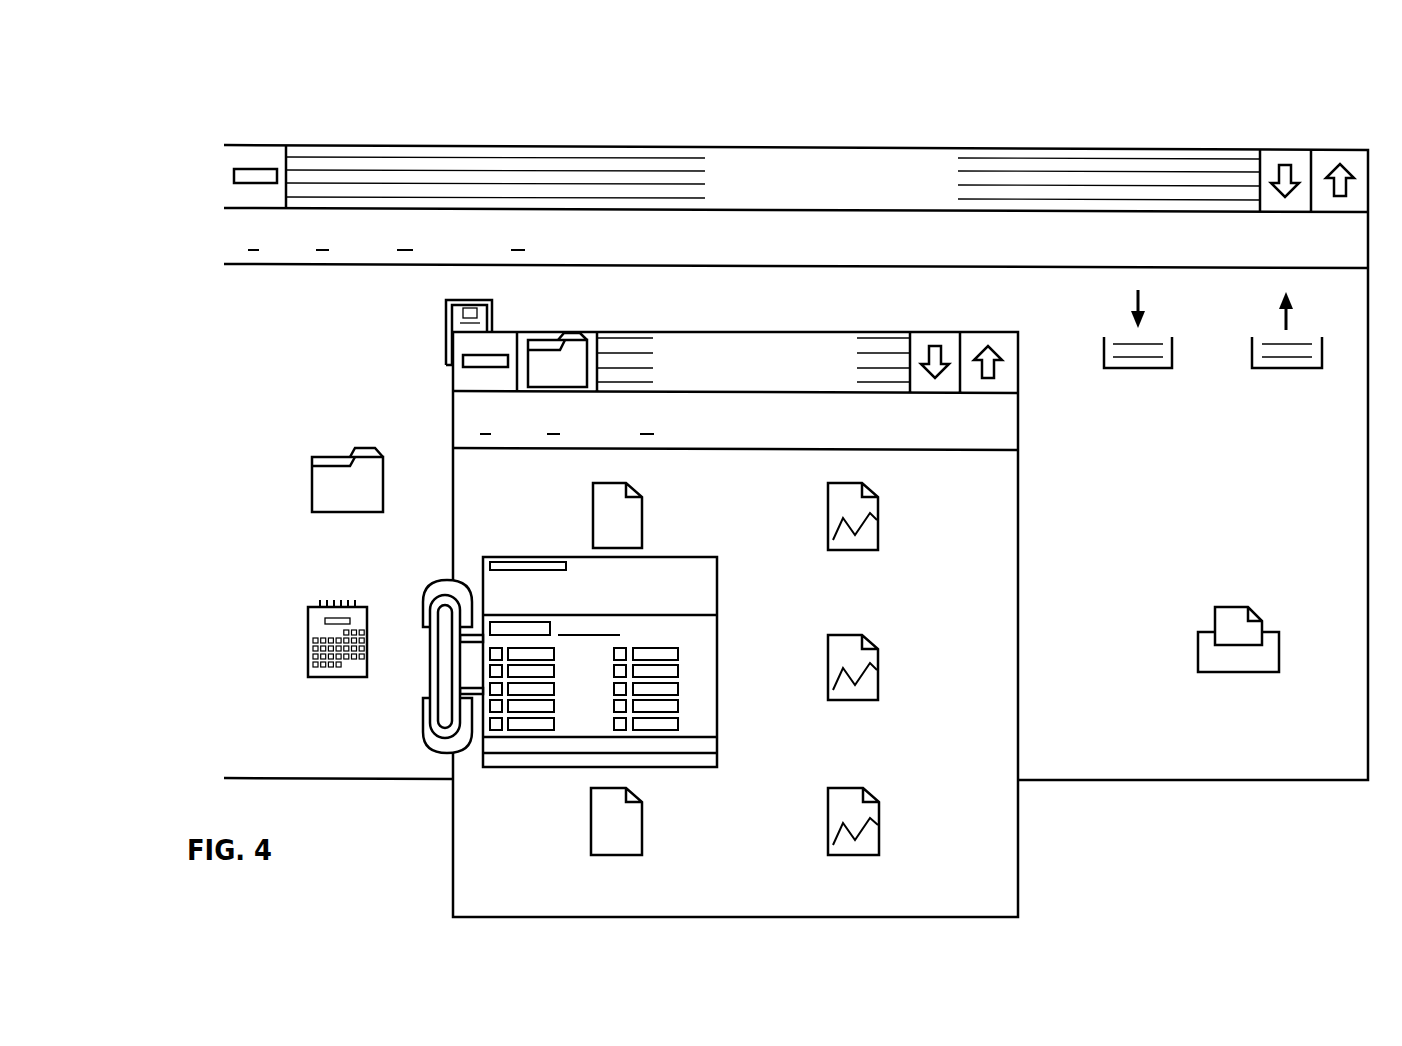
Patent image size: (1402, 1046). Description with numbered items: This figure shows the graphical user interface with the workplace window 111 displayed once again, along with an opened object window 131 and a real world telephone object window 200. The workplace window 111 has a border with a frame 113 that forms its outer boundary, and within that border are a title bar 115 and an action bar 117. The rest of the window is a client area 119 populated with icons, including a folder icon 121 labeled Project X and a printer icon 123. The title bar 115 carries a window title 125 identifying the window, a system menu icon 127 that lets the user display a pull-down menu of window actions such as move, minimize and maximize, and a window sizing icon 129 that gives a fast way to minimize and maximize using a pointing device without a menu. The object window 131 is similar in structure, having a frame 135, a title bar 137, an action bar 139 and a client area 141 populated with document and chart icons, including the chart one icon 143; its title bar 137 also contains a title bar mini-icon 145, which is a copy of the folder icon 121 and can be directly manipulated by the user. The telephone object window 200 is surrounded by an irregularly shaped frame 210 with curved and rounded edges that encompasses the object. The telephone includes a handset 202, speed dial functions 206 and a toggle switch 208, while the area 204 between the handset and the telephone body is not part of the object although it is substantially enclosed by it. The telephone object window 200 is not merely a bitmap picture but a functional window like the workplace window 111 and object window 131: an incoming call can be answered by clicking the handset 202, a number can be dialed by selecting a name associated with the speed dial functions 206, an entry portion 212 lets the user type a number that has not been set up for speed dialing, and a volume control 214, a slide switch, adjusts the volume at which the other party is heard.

The workplace window 111 is at (176, 148).
The frame 113 is at (222, 505).
The title bar 115 is at (1097, 149).
The action bar 117 is at (263, 265).
The client area 119 is at (1165, 518).
The folder icon 121 is at (312, 483).
The printer icon 123 is at (1262, 633).
The window title 125 is at (827, 145).
The system menu icon 127 is at (254, 157).
The window sizing icon 129 is at (1280, 149).
The object window 131 is at (1018, 595).
The frame 135 is at (1018, 857).
The title bar 137 is at (772, 332).
The action bar 139 is at (737, 433).
The client area 141 is at (785, 669).
The chart 1 icon 143 is at (872, 492).
The title bar mini-icon 145 is at (542, 373).
The telephone object window 200 is at (680, 768).
The handset 202 is at (428, 740).
The area 204 is at (476, 742).
The speed dial functions 206 is at (568, 706).
The toggle switch 208 is at (553, 611).
The frame 210 is at (503, 557).
The entry portion 212 is at (543, 582).
The volume control 214 is at (598, 628).